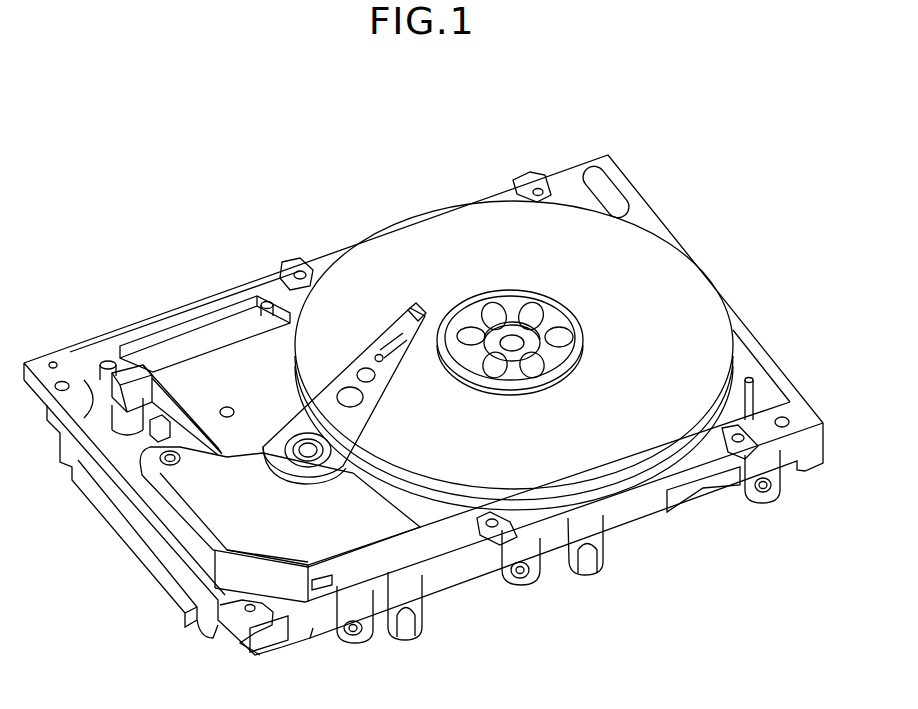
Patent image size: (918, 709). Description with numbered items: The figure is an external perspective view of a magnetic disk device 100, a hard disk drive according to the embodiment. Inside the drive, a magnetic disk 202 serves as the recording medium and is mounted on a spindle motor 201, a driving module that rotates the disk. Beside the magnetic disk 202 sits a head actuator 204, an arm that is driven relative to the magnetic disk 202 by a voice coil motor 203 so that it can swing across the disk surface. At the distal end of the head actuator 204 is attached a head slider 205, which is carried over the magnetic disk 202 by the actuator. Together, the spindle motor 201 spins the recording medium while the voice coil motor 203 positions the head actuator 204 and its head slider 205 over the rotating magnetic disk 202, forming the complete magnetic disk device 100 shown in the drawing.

The magnetic disk device 100 is at (637, 113).
The spindle motor 201 is at (547, 312).
The magnetic disk 202 is at (418, 232).
The voice coil motor 203 is at (220, 519).
The head actuator 204 is at (352, 420).
The head slider 205 is at (417, 309).